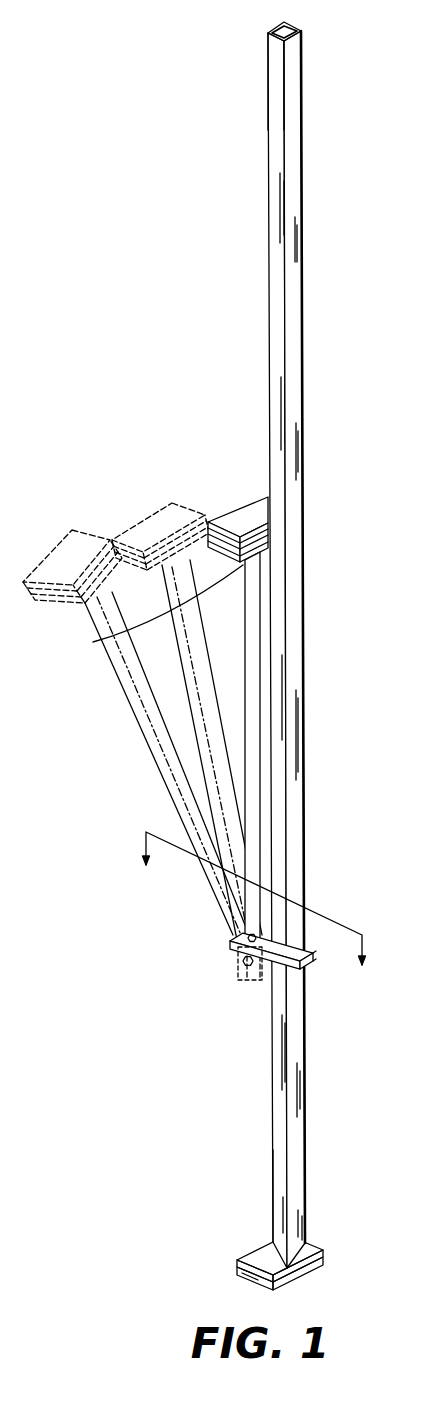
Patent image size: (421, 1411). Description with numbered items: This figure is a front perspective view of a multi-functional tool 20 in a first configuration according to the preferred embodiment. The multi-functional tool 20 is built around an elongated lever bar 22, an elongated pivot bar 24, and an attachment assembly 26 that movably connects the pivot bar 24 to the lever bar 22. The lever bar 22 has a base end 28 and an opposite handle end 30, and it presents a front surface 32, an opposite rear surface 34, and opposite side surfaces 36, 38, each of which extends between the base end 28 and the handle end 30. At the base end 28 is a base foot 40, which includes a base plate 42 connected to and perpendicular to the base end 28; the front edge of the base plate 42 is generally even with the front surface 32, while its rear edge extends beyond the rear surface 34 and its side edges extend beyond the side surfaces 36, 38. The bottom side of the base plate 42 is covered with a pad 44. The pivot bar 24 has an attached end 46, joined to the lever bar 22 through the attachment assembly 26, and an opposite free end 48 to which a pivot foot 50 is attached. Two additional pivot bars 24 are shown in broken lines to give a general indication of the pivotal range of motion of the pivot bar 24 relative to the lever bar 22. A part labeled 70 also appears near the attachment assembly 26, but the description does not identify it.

The multi-functional tool 20 is at (155, 160).
The elongated lever bar 22 is at (288, 644).
The elongated pivot bar 24 is at (242, 668).
The attachment assembly 26 is at (259, 990).
The base end 28 is at (310, 1225).
The handle end 30 is at (268, 121).
The front surface 32 is at (291, 243).
The rear surface 34 is at (276, 23).
The side surface 36 is at (277, 201).
The side surface 38 is at (293, 24).
The base foot 40 is at (270, 1264).
The base plate 42 is at (250, 1250).
The pad 44 is at (257, 1277).
The attached end 46 is at (248, 975).
The free end 48 is at (93, 642).
The pivot foot 50 is at (236, 500).
The pin 70 is at (317, 960).